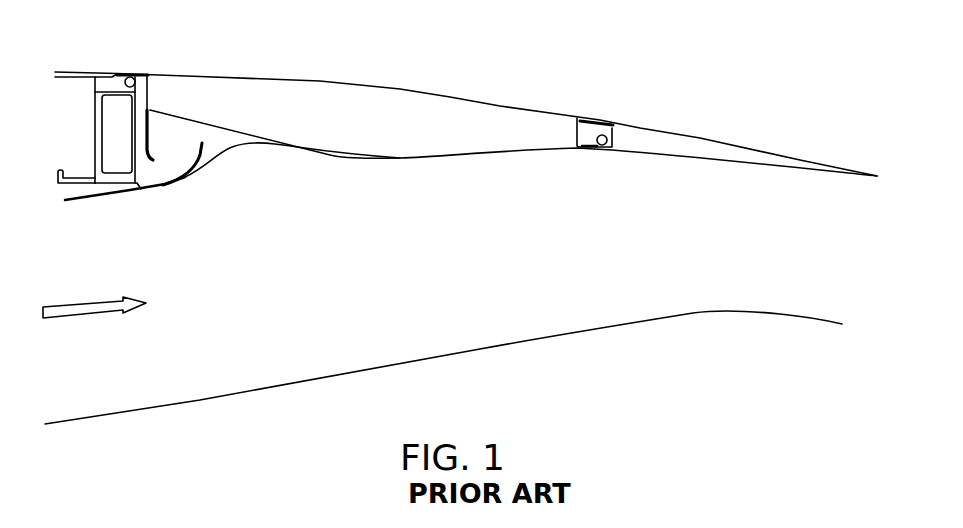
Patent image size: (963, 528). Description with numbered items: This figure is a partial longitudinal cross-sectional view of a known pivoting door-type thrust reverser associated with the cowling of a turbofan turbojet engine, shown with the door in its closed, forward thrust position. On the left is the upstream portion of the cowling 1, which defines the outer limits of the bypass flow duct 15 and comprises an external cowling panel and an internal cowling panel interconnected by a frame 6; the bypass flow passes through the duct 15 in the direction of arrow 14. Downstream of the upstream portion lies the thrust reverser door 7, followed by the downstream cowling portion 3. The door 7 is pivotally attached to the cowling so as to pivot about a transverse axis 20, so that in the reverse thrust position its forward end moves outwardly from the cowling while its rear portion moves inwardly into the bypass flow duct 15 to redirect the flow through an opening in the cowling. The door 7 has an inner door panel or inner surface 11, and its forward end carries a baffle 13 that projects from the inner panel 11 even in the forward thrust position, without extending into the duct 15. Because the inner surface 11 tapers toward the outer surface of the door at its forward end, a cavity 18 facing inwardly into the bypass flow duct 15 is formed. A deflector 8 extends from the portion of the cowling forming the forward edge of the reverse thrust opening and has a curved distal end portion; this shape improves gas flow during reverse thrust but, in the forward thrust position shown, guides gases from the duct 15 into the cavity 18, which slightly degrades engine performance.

The upstream portion of the cowling 1 is at (82, 73).
The downstream cowling portion 3 is at (640, 137).
The frame 6 is at (106, 157).
The thrust reverser door 7 is at (370, 122).
The deflector 8 is at (183, 176).
The inner door panel 11 is at (252, 134).
The baffle 13 is at (147, 145).
The arrow 14 is at (73, 311).
The bypass flow duct 15 is at (443, 327).
The cavity 18 is at (213, 133).
The transverse axis 20 is at (460, 224).